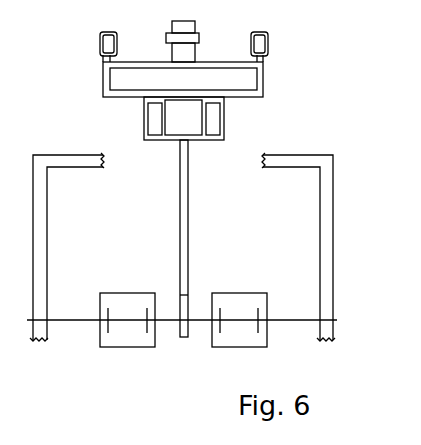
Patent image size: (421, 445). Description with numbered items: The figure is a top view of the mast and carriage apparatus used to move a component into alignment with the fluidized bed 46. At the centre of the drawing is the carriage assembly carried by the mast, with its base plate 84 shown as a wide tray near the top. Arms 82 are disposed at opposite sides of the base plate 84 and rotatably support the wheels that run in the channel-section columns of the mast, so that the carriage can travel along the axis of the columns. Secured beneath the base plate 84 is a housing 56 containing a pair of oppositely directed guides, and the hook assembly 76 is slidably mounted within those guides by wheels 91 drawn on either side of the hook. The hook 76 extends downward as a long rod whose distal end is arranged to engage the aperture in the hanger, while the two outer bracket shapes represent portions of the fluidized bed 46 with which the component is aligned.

The fluidized bed 46 is at (334, 226).
The drive housing 56 is at (145, 117).
The hook 76 is at (188, 214).
The arms 82 is at (100, 43).
The base plate 84 is at (252, 80).
The wheels 91 is at (150, 130).